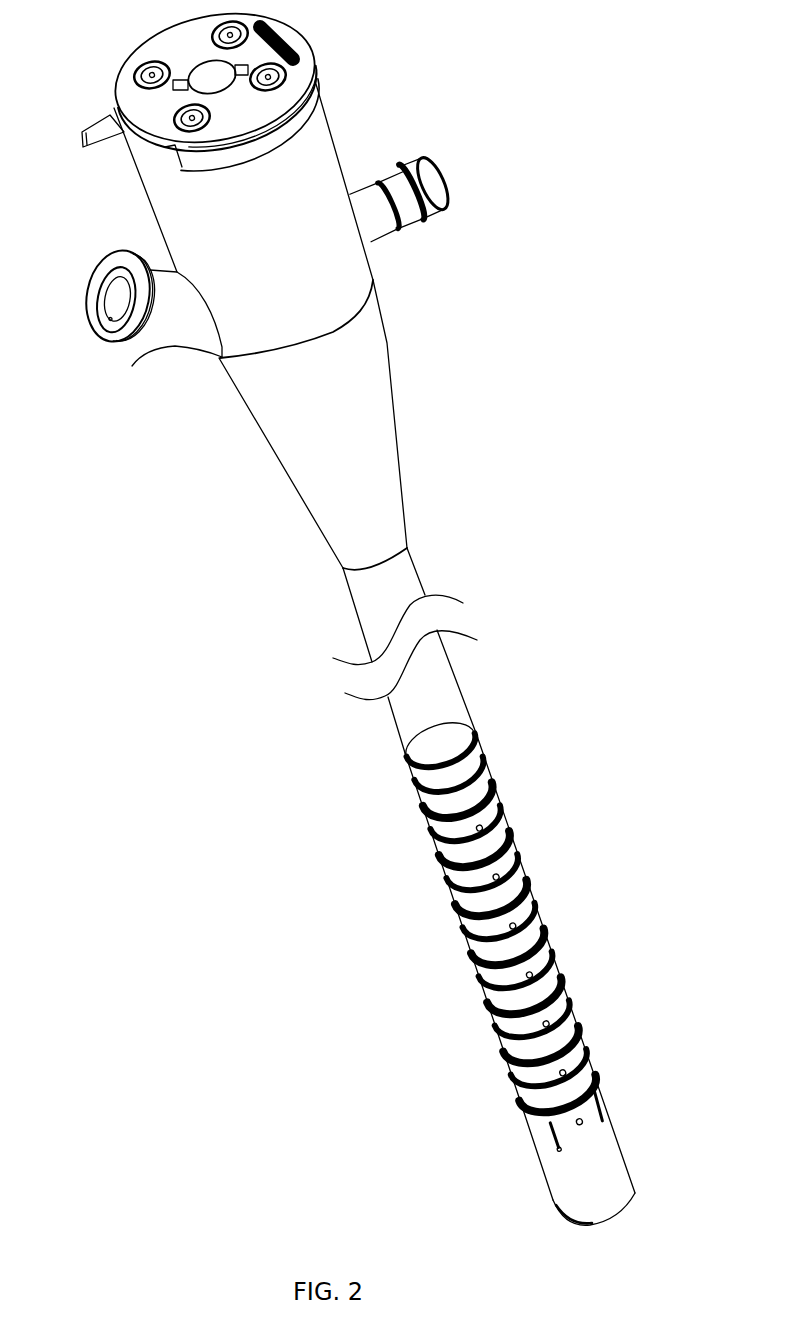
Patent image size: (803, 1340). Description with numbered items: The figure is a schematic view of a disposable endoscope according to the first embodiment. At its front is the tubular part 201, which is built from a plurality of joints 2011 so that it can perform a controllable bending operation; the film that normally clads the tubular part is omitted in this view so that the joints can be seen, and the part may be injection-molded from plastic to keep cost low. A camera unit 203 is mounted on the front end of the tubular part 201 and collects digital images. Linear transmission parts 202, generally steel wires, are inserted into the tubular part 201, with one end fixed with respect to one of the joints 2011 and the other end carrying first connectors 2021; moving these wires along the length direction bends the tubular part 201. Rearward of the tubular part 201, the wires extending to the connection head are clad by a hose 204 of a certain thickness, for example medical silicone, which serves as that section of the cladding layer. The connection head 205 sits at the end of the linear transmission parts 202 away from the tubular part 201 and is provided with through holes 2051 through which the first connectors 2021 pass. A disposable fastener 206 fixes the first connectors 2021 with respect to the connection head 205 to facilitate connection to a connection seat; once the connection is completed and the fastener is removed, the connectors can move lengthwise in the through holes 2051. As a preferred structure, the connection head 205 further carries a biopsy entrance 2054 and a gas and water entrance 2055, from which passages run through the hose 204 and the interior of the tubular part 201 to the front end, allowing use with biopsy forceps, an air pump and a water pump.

The tubular part 201 is at (470, 942).
The joints 2011 is at (532, 918).
The linear transmission parts 202 is at (602, 1094).
The camera unit 203 is at (584, 1220).
The hose 204 is at (385, 712).
The connection head 205 is at (398, 340).
The first connectors 2021 is at (150, 63).
The through holes 2051 is at (307, 70).
The biopsy entrance 2054 is at (170, 335).
The gas and water entrance 2055 is at (422, 173).
The disposable fastener 206 is at (76, 150).